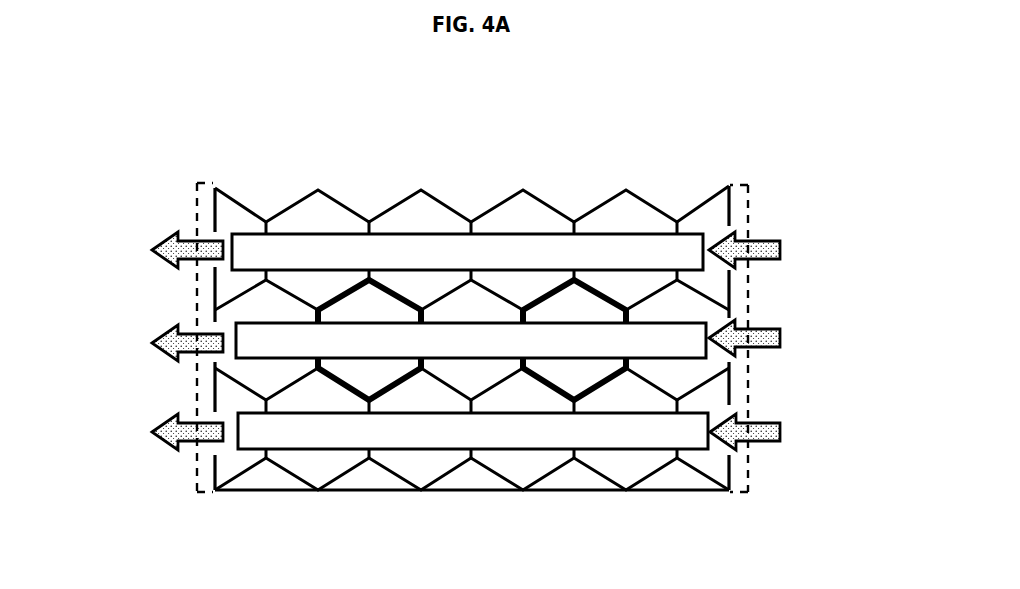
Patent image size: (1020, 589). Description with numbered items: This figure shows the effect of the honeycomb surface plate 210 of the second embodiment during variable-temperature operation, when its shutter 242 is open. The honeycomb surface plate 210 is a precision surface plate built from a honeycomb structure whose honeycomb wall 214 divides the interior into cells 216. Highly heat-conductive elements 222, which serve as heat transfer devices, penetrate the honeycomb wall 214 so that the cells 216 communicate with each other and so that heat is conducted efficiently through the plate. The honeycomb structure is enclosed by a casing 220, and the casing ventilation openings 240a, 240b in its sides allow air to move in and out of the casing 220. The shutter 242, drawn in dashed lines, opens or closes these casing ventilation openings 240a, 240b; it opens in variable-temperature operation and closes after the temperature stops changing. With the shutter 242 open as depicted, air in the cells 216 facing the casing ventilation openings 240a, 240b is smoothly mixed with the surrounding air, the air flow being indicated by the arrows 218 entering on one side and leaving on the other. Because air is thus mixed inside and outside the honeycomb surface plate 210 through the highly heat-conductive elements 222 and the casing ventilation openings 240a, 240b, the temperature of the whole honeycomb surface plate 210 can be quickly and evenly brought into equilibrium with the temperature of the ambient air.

The honeycomb surface plate 210 is at (572, 150).
The honeycomb wall 214 is at (445, 383).
The cells 216 is at (274, 313).
The air flow 218 is at (192, 348).
The casing 220 is at (600, 491).
The highly heat-conductive element 222 is at (620, 245).
The casing ventilation opening 240a is at (732, 318).
The casing ventilation opening 240b is at (212, 323).
The shutter 242 is at (190, 220).